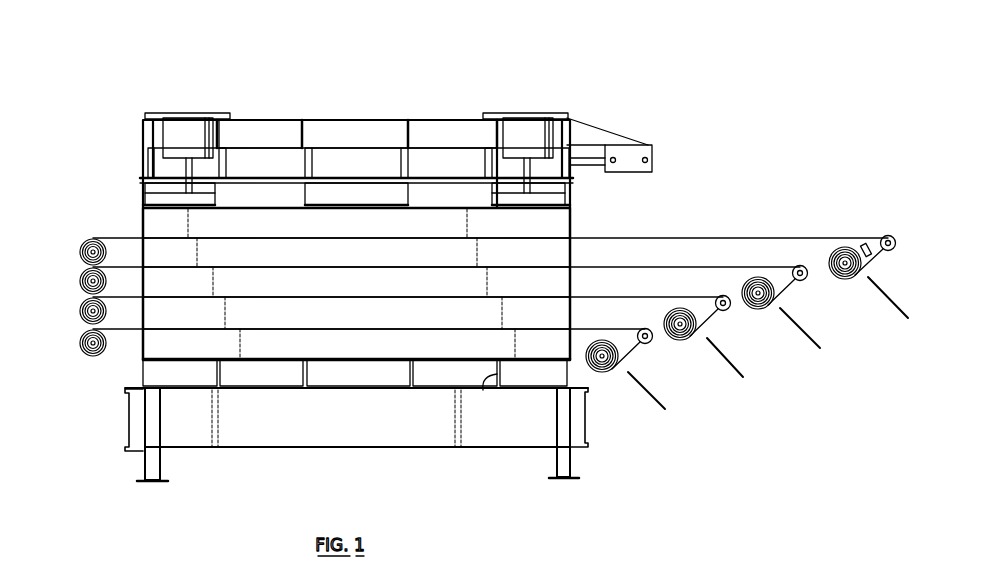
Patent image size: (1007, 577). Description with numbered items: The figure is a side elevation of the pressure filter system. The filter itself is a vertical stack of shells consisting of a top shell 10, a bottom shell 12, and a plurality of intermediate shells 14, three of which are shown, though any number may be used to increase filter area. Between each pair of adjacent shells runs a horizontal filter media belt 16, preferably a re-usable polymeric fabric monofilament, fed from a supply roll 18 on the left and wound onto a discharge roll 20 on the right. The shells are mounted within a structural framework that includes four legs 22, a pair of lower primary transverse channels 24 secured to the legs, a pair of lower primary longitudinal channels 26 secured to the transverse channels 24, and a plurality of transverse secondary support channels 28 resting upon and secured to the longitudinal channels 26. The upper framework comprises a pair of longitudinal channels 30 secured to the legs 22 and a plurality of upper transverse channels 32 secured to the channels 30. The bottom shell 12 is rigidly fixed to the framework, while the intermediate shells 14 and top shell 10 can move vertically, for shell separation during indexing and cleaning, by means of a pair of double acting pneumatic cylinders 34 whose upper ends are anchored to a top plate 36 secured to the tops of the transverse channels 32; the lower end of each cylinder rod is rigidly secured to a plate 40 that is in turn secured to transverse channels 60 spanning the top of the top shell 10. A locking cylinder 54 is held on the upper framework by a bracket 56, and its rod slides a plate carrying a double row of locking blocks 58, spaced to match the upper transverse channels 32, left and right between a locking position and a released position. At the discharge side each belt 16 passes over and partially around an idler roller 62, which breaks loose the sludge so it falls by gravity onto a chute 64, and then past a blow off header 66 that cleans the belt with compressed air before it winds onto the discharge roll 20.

The top shell 10 is at (290, 232).
The bottom shell 12 is at (403, 350).
The intermediate shells 14 is at (331, 258).
The filter media belt 16 is at (730, 237).
The supply roll 18 is at (82, 277).
The discharge roll 20 is at (606, 372).
The legs 22 is at (557, 461).
The lower primary transverse channels 24 is at (588, 446).
The lower primary longitudinal channels 26 is at (384, 423).
The transverse secondary support channels 28 is at (413, 372).
The longitudinal channels 30 is at (330, 140).
The upper transverse channels 32 is at (220, 131).
The double acting pneumatic cylinders 34 is at (179, 124).
The top plate 36 is at (548, 113).
The plate 40 is at (567, 196).
The locking cylinder 54 is at (652, 158).
The bracket 56 is at (600, 132).
The locking blocks 58 is at (401, 156).
The transverse channels 60 is at (403, 189).
The idler rollers 62 is at (806, 279).
The chutes 64 is at (740, 376).
The blow off header 66 is at (863, 243).